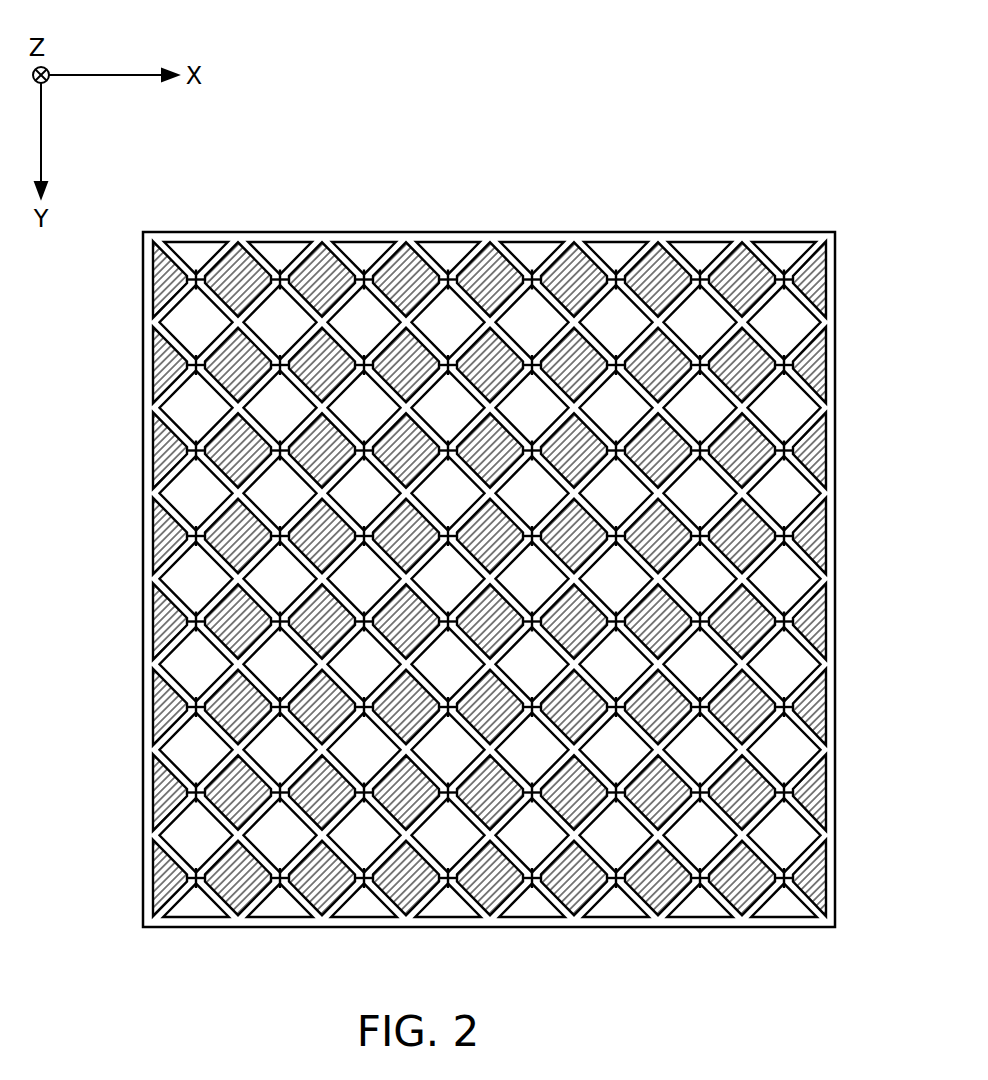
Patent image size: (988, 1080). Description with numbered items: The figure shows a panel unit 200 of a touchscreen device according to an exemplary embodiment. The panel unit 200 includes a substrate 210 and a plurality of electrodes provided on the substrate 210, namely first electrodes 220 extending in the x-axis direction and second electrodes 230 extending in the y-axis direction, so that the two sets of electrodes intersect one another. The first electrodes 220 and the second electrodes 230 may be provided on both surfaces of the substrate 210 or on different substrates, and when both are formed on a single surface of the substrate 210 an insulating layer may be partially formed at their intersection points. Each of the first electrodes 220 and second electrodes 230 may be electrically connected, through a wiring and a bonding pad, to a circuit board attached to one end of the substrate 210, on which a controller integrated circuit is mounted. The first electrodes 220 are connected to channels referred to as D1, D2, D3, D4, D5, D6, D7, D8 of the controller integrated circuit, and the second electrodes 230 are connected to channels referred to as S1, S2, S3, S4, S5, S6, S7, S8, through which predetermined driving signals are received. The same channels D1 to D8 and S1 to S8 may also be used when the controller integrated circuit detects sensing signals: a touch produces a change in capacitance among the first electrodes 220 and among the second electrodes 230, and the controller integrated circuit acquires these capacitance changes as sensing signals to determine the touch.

The panel unit 200 is at (601, 128).
The substrate 210 is at (152, 233).
The first electrodes 220 is at (157, 298).
The second electrodes 230 is at (210, 248).
The channel S1 is at (196, 242).
The channel S2 is at (280, 242).
The channel S3 is at (364, 242).
The channel S4 is at (448, 242).
The channel S5 is at (532, 242).
The channel S6 is at (616, 242).
The channel S7 is at (700, 242).
The channel S8 is at (784, 242).
The channel D1 is at (153, 280).
The channel D2 is at (153, 365).
The channel D3 is at (153, 450).
The channel D4 is at (153, 536).
The channel D5 is at (153, 622).
The channel D6 is at (153, 707).
The channel D7 is at (153, 792).
The channel D8 is at (153, 878).